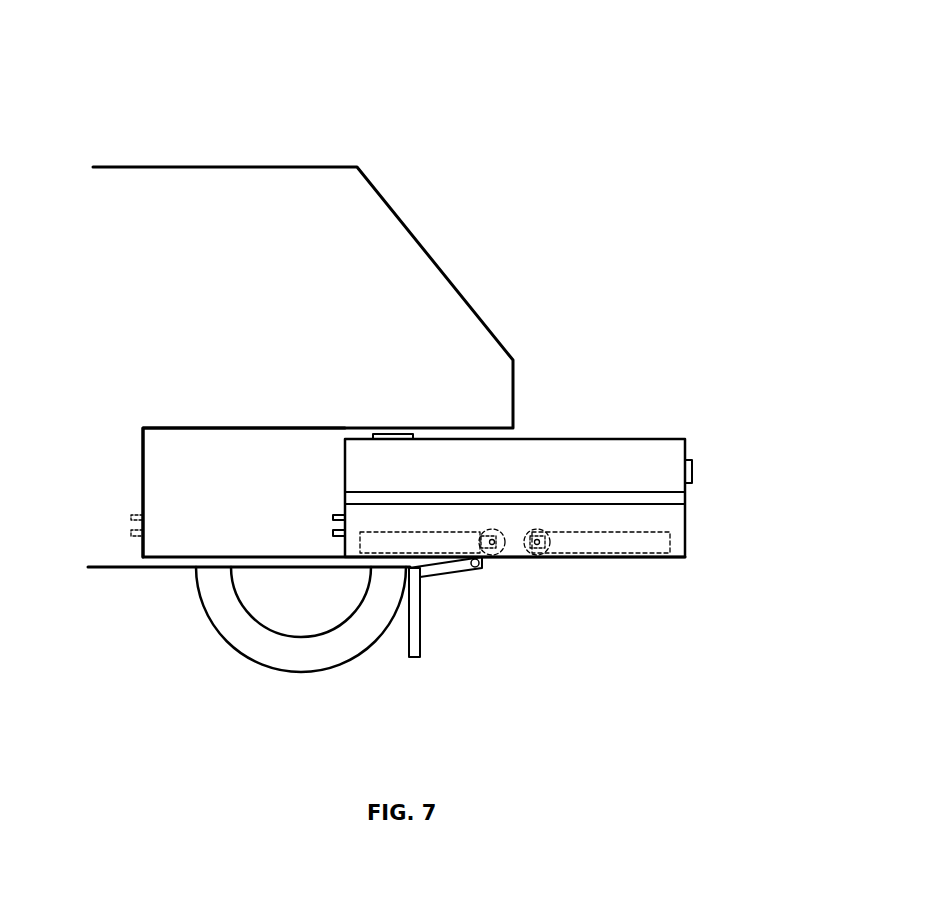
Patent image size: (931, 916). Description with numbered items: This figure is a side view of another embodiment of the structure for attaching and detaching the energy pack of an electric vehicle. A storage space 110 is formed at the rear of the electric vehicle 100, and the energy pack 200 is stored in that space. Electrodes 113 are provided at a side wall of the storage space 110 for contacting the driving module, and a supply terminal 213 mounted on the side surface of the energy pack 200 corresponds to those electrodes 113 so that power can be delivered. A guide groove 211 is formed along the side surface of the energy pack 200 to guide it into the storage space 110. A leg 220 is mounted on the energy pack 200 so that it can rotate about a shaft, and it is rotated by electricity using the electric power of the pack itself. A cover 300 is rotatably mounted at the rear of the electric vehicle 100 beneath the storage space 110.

The electric vehicle 100 is at (250, 130).
The storage space 110 is at (285, 432).
The electrodes 113 is at (133, 537).
The energy pack 200 is at (660, 420).
The guide groove 211 is at (678, 497).
The supply terminal 213 is at (341, 535).
The leg 220 is at (636, 545).
The cover 300 is at (413, 657).